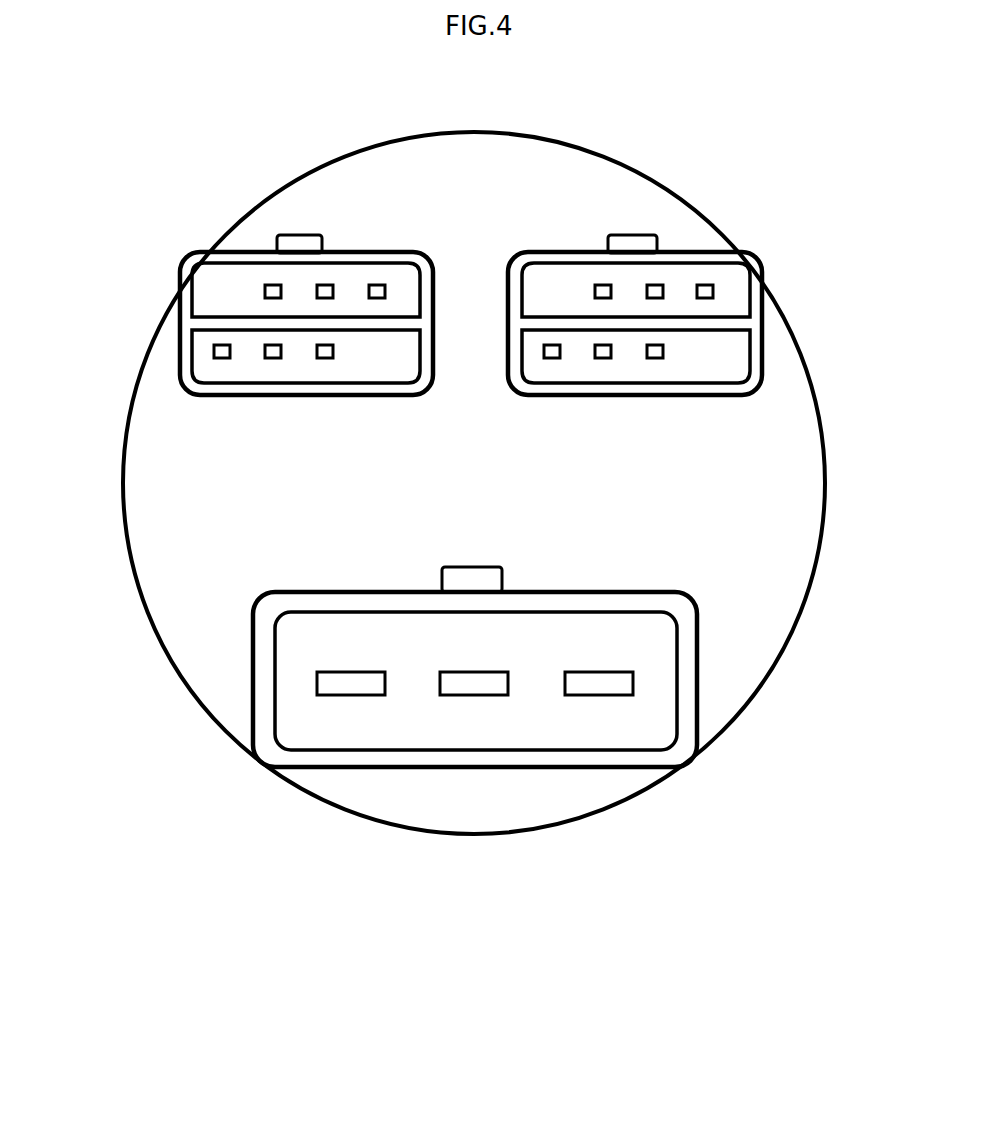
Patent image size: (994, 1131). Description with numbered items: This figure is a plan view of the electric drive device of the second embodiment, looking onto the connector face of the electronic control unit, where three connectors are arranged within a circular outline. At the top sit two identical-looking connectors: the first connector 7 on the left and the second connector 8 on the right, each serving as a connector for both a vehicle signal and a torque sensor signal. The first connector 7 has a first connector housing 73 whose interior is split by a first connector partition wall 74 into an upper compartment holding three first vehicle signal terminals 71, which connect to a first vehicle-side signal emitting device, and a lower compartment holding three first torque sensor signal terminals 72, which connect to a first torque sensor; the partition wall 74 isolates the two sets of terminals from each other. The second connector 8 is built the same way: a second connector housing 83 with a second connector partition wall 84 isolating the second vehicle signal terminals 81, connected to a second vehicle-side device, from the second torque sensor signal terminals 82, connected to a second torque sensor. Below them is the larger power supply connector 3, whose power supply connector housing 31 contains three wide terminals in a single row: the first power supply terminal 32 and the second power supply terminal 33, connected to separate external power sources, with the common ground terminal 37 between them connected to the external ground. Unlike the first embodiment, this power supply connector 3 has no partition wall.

The power supply connector 3 is at (272, 752).
The power supply connector housing 31 is at (262, 743).
The first power supply terminal 32 is at (347, 686).
The second power supply terminal 33 is at (605, 686).
The common ground terminal 37 is at (477, 686).
The first connector 7 is at (198, 260).
The first vehicle signal terminals 71 is at (269, 287).
The first torque sensor signal terminals 72 is at (222, 352).
The first connector housing 73 is at (185, 285).
The first connector partition wall 74 is at (352, 318).
The second connector 8 is at (743, 262).
The second vehicle signal terminals 81 is at (704, 287).
The second torque sensor signal terminals 82 is at (663, 352).
The second connector housing 83 is at (760, 277).
The second connector partition wall 84 is at (575, 322).